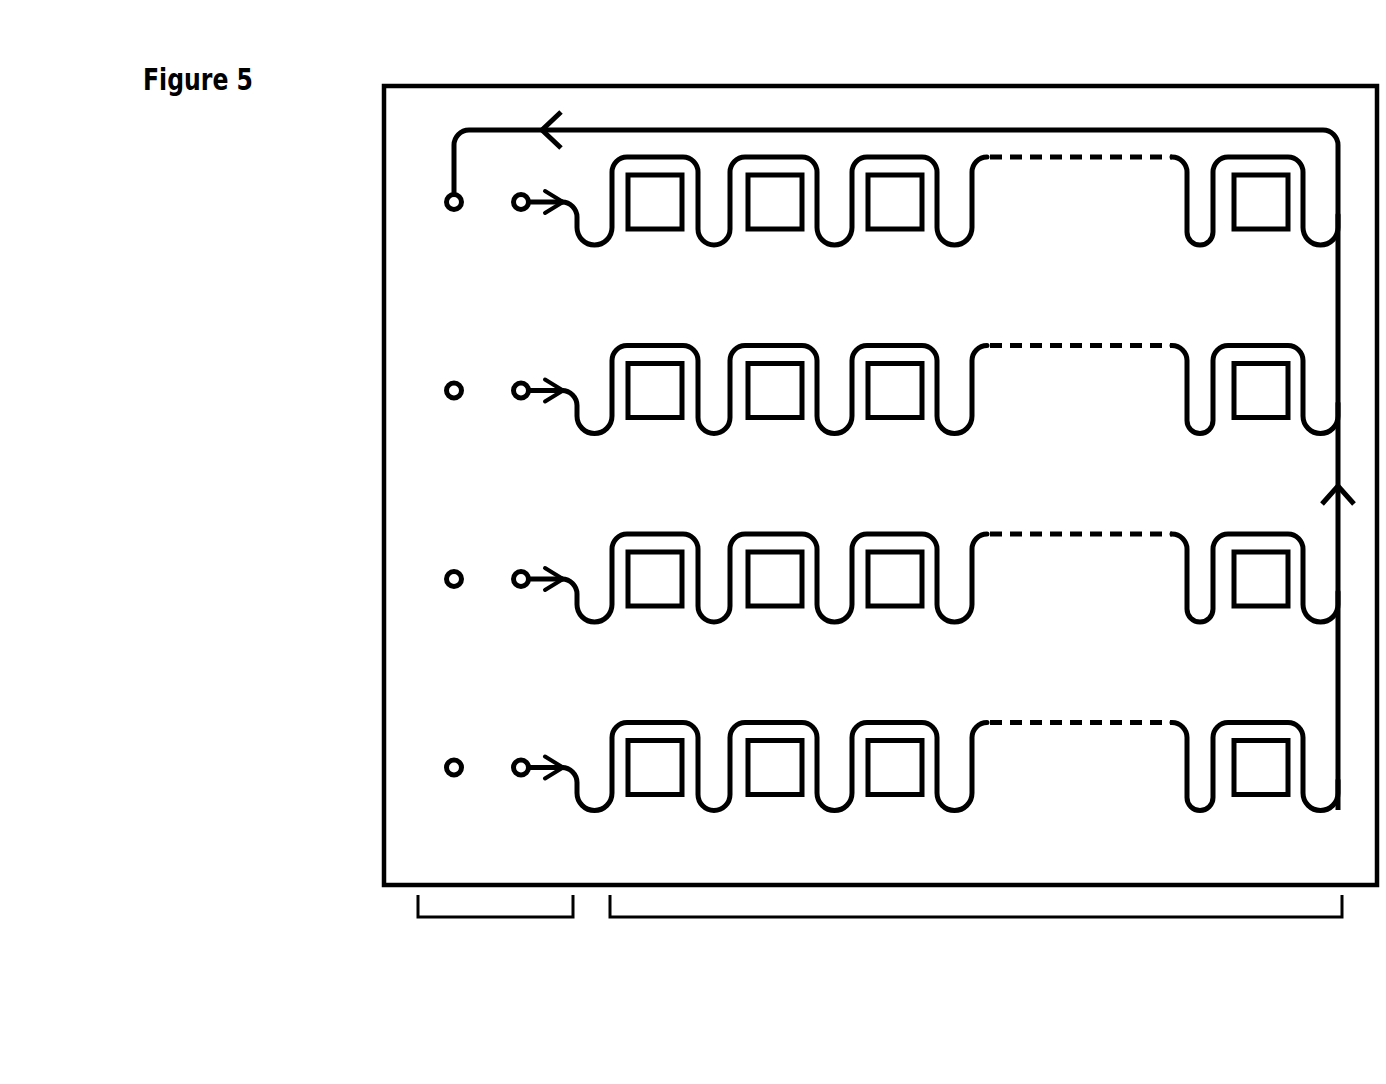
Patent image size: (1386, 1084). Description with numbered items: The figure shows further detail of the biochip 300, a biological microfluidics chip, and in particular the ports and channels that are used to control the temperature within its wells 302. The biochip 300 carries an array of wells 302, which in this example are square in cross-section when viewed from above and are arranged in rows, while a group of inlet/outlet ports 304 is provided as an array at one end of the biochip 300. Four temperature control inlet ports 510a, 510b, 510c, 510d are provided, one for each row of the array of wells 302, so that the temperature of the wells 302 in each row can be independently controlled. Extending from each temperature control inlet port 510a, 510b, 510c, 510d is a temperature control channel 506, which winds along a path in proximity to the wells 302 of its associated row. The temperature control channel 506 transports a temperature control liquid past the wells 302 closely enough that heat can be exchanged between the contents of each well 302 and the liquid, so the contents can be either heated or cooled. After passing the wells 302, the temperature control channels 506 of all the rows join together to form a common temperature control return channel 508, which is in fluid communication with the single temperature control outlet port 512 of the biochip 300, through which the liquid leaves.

The biochip 300 is at (369, 752).
The wells 302 is at (935, 650).
The inlet/outlet ports 304 is at (495, 668).
The temperature control channel 506 is at (567, 199).
The common temperature control return channel 508 is at (792, 124).
The temperature control inlet port 510a is at (499, 209).
The temperature control inlet port 510b is at (501, 409).
The temperature control inlet port 510c is at (501, 597).
The temperature control inlet port 510d is at (501, 784).
The temperature control outlet port 512 is at (429, 196).